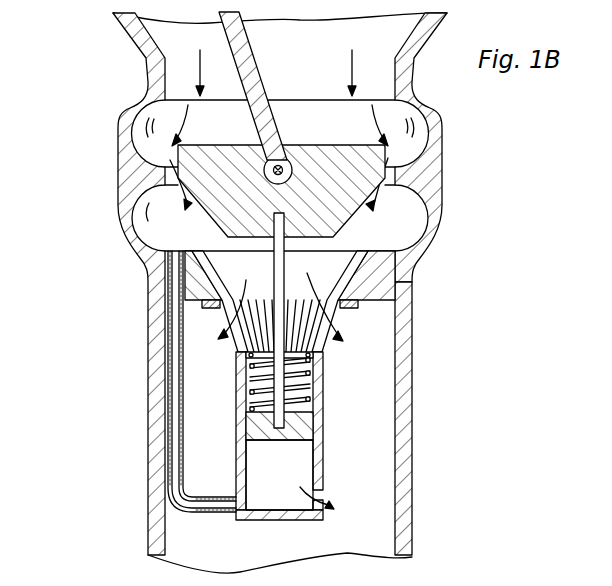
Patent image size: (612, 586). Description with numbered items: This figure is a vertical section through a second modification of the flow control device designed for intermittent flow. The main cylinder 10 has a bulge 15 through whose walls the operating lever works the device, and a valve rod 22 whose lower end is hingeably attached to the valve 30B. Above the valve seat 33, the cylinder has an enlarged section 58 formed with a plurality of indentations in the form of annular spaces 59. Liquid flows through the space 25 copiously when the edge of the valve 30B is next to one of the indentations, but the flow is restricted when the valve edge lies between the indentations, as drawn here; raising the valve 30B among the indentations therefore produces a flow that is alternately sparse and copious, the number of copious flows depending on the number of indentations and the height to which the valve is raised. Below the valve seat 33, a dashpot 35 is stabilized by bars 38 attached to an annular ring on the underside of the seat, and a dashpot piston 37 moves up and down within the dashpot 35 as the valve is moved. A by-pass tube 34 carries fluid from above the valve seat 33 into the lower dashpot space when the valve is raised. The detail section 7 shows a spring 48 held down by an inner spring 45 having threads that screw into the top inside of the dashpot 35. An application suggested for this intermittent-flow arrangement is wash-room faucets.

The bulge 15 is at (133, 30).
The valve rod 22 is at (246, 72).
The valve 30B is at (281, 173).
The annular space 59 is at (418, 145).
The enlarged section 58 is at (433, 184).
The valve seat 33 is at (384, 283).
The space 25 is at (227, 262).
The bars 38 is at (328, 331).
The section 7 is at (243, 362).
The inner spring 45 is at (318, 358).
The spring 48 is at (313, 390).
The dashpot piston 37 is at (310, 427).
The dashpot 35 is at (313, 457).
The by-pass tube 34 is at (180, 415).
The cylinder 10 is at (400, 443).